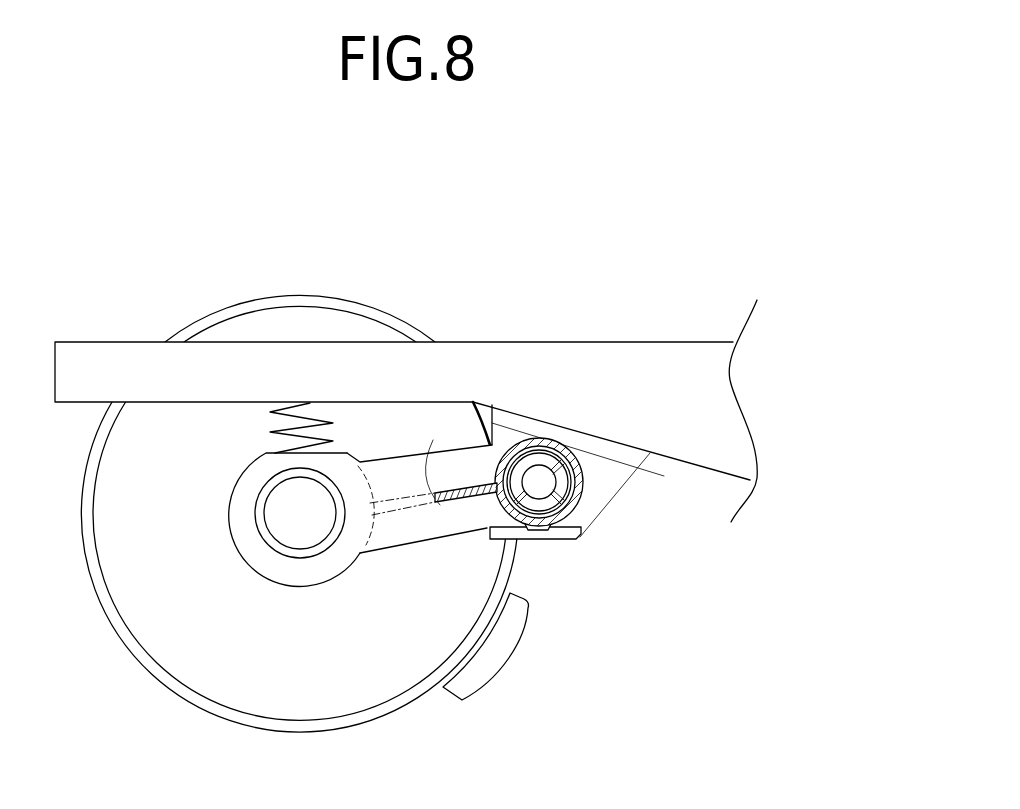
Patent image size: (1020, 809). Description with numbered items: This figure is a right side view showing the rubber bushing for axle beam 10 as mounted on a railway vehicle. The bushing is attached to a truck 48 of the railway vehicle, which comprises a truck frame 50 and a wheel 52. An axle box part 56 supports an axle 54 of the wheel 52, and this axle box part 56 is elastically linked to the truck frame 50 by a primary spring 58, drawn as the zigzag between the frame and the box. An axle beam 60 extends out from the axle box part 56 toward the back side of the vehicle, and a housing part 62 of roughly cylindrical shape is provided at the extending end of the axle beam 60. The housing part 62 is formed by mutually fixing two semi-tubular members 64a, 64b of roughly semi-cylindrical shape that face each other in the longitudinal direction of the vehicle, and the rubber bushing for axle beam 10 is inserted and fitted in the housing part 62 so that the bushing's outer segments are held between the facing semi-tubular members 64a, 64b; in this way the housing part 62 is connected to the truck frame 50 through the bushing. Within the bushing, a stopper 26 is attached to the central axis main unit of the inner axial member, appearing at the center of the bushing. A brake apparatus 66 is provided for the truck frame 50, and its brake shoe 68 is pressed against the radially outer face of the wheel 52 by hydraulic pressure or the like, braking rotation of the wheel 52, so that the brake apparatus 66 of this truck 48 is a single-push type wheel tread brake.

The rubber bushing for axle beam 10 is at (535, 462).
The stopper 26 is at (563, 487).
The truck 48 is at (406, 400).
The truck frame 50 is at (542, 373).
The wheel 52 is at (230, 672).
The axle 54 is at (292, 525).
The axle box part 56 is at (327, 563).
The primary spring 58 is at (260, 428).
The axle beam 60 is at (398, 535).
The housing part 62 is at (600, 482).
The semi-tubular member 64a is at (495, 473).
The semi-tubular member 64b is at (556, 516).
The brake apparatus 66 is at (509, 674).
The brake shoe 68 is at (507, 630).